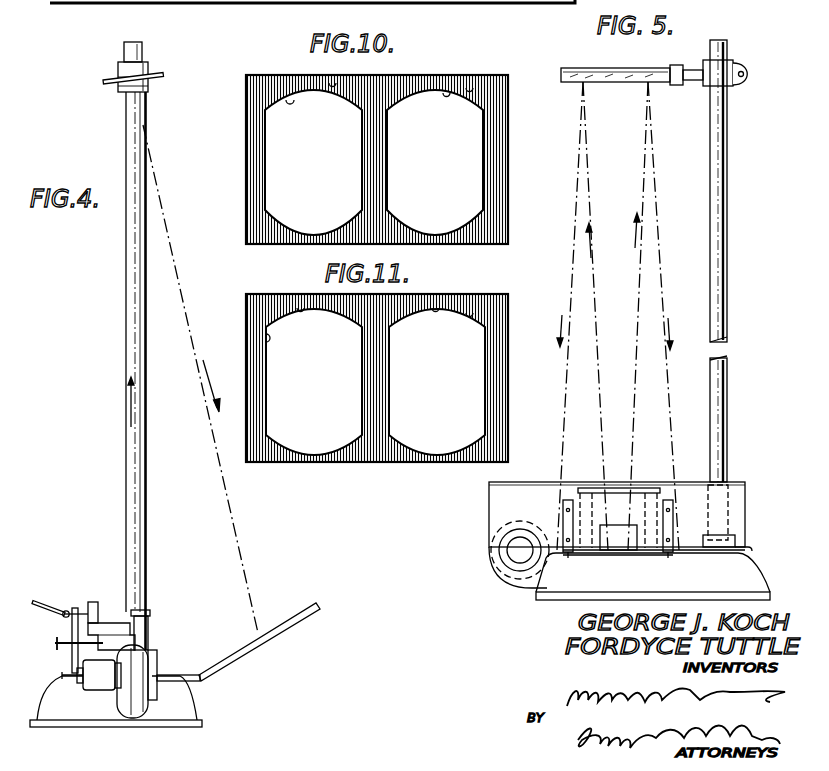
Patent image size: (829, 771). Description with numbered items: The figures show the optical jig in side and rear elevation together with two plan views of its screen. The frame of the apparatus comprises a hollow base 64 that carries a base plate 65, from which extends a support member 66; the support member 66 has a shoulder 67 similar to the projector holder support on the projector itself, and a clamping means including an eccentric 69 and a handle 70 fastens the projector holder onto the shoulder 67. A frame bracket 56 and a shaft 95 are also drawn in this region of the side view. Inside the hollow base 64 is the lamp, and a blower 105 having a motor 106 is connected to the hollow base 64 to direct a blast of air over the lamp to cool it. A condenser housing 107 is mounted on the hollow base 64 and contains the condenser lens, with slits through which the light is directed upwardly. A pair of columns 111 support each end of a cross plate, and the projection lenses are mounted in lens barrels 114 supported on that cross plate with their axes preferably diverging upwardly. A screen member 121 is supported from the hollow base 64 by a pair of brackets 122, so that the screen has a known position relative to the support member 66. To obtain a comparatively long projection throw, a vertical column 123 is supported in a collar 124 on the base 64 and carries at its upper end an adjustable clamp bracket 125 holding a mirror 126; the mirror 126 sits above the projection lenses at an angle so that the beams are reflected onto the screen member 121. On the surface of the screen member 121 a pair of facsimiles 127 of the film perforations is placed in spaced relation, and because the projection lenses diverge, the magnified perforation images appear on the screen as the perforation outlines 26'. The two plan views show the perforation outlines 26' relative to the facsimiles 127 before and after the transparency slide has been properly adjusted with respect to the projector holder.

In FIG. 10, the perforation outlines 26' is at (384, 141).
In FIG. 11, the perforation outlines 26' is at (375, 357).
In FIG. 4, the frame bracket 56 is at (98, 610).
In FIG. 4, the hollow base 64 is at (179, 705).
In FIG. 5, the hollow base 64 is at (540, 593).
In FIG. 4, the base plate 65 is at (64, 676).
In FIG. 5, the base plate 65 is at (637, 550).
In FIG. 4, the support member 66 is at (72, 608).
In FIG. 4, the shoulder 67 is at (76, 610).
In FIG. 4, the eccentric 69 is at (62, 615).
In FIG. 4, the handle 70 is at (34, 601).
In FIG. 4, the shaft 95 is at (56, 643).
In FIG. 4, the blower 105 is at (136, 706).
In FIG. 5, the blower 105 is at (492, 557).
In FIG. 4, the motor 106 is at (95, 690).
In FIG. 4, the condenser housing 107 is at (158, 656).
In FIG. 5, the condenser housing 107 is at (638, 512).
In FIG. 4, the columns 111 is at (148, 631).
In FIG. 5, the columns 111 is at (578, 490).
In FIG. 4, the lens barrels 114 is at (150, 612).
In FIG. 4, the screen member 121 is at (297, 623).
In FIG. 10, the screen member 121 is at (247, 97).
In FIG. 11, the screen member 121 is at (252, 294).
In FIG. 5, the screen member 121 is at (491, 503).
In FIG. 4, the brackets 122 is at (239, 661).
In FIG. 5, the brackets 122 is at (666, 555).
In FIG. 4, the vertical column 123 is at (127, 347).
In FIG. 5, the vertical column 123 is at (728, 206).
In FIG. 5, the collar 124 is at (744, 548).
In FIG. 4, the adjustable clamp bracket 125 is at (119, 70).
In FIG. 5, the adjustable clamp bracket 125 is at (731, 62).
In FIG. 4, the mirror 126 is at (152, 73).
In FIG. 5, the mirror 126 is at (616, 62).
In FIG. 10, the facsimiles 127 is at (290, 100).
In FIG. 11, the facsimiles 127 is at (266, 338).